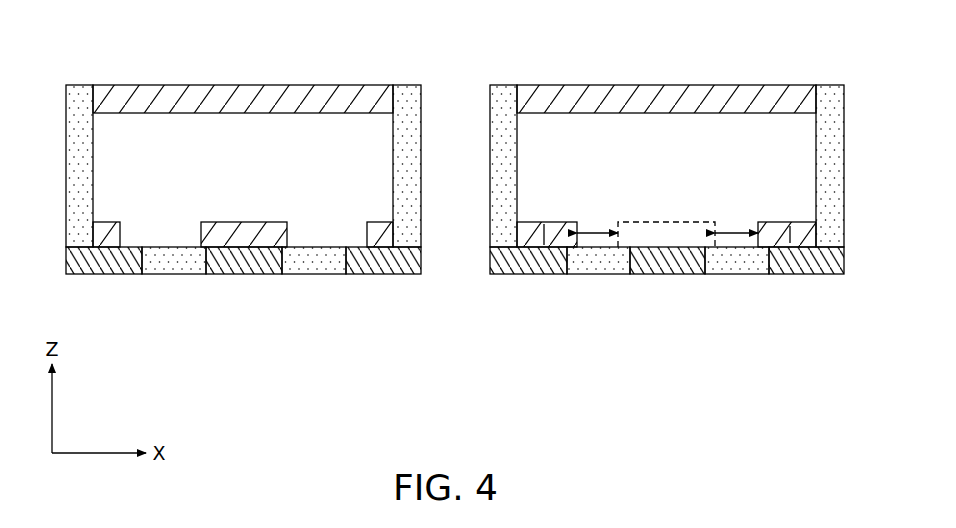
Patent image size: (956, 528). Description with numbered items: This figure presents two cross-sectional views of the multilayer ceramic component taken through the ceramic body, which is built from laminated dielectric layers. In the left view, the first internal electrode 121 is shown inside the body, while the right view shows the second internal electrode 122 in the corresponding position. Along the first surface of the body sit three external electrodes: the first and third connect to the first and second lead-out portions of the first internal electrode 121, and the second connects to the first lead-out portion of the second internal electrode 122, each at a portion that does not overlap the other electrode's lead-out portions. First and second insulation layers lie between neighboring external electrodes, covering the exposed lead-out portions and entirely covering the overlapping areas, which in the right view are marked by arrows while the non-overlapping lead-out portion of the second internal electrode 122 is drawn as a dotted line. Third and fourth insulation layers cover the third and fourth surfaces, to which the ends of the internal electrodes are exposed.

The first internal electrode 121 is at (195, 120).
The second internal electrode 122 is at (619, 120).